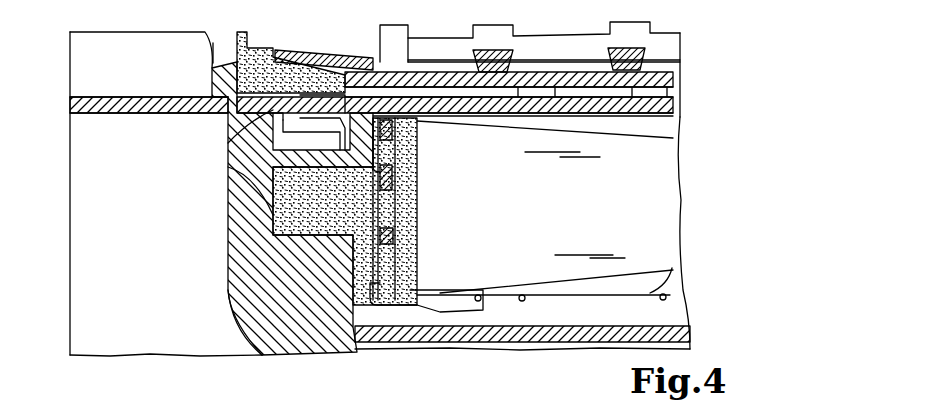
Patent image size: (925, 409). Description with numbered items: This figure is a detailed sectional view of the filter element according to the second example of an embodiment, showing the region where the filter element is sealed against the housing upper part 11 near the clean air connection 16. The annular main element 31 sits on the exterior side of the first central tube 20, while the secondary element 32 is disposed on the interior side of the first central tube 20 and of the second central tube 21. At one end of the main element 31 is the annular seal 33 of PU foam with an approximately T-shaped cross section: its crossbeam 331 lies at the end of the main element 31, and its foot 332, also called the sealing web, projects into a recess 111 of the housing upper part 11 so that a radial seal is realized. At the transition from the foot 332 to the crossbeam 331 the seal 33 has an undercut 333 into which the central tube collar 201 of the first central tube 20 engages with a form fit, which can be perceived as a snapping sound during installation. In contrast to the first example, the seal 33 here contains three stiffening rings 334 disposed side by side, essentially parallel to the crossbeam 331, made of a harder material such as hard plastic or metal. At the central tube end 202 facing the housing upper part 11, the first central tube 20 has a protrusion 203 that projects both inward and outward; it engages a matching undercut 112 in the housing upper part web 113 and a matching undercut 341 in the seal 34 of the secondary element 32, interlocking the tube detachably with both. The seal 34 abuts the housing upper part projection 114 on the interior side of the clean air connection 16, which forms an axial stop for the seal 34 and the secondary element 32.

The housing upper part 11 is at (258, 330).
The clean air connection 16 is at (113, 107).
The housing upper part projection 114 is at (223, 77).
The seal 34 is at (250, 68).
The undercut 341 is at (318, 88).
The protrusion 203 is at (320, 104).
The second central tube 21 is at (633, 32).
The secondary element 32 is at (670, 78).
The first central tube 20 is at (663, 105).
The central tube end 202 is at (300, 113).
The housing upper part web 113 is at (300, 128).
The undercut 112 is at (345, 148).
The foot 332 is at (290, 222).
The recess 111 is at (262, 232).
The central tube collar 201 is at (372, 162).
The undercut 333 is at (395, 198).
The stiffening ring 334 is at (393, 232).
The crossbeam 331 is at (370, 300).
The seal 33 is at (402, 320).
The main element 31 is at (690, 260).